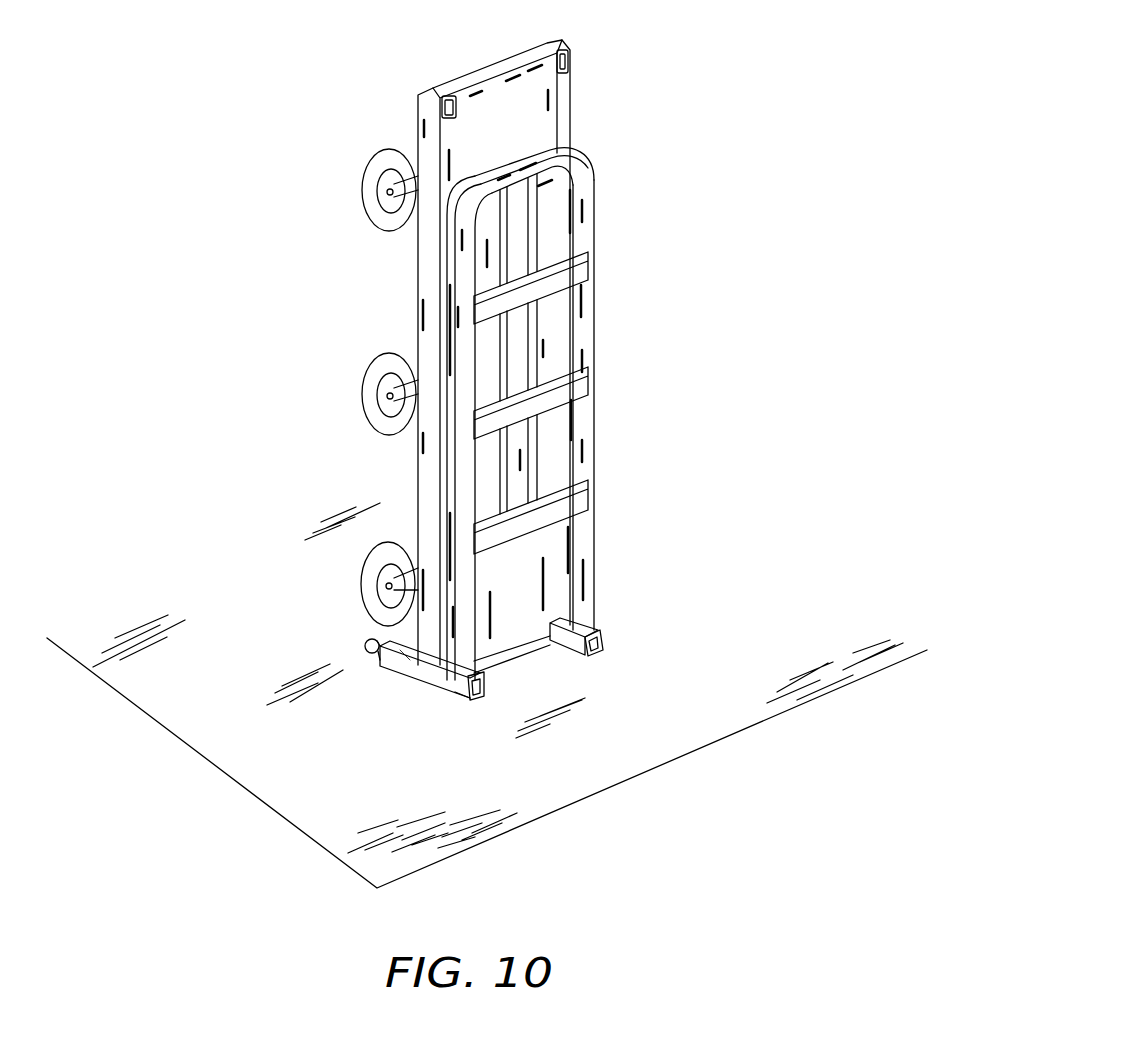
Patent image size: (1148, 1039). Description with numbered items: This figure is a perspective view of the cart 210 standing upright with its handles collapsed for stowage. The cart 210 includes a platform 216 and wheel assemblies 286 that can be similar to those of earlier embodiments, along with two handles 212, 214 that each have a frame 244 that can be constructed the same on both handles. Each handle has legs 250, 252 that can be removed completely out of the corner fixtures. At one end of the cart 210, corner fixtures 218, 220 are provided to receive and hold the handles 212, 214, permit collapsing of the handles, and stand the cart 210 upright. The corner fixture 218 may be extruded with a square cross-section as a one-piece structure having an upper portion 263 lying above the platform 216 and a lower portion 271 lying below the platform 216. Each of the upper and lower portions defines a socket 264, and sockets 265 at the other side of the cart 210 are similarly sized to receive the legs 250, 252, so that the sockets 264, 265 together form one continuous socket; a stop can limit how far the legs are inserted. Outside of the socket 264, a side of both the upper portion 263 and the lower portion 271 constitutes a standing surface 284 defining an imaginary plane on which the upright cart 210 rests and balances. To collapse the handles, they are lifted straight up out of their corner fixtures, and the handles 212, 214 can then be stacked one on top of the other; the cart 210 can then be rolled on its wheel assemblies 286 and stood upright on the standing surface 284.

The cart 210 is at (690, 230).
The handle 212 is at (512, 414).
The handle 214 is at (432, 254).
The platform 216 is at (582, 109).
The corner fixture 218 is at (388, 696).
The corner fixture 220 is at (565, 670).
The frame 244 is at (584, 217).
The leg 250 is at (465, 639).
The leg 252 is at (585, 613).
The upper portion 263 is at (458, 700).
The socket 264 is at (485, 689).
The socket 265 is at (443, 98).
The lower portion 271 is at (390, 665).
The standing surface 284 is at (460, 702).
The wheel assembly 286 is at (356, 640).